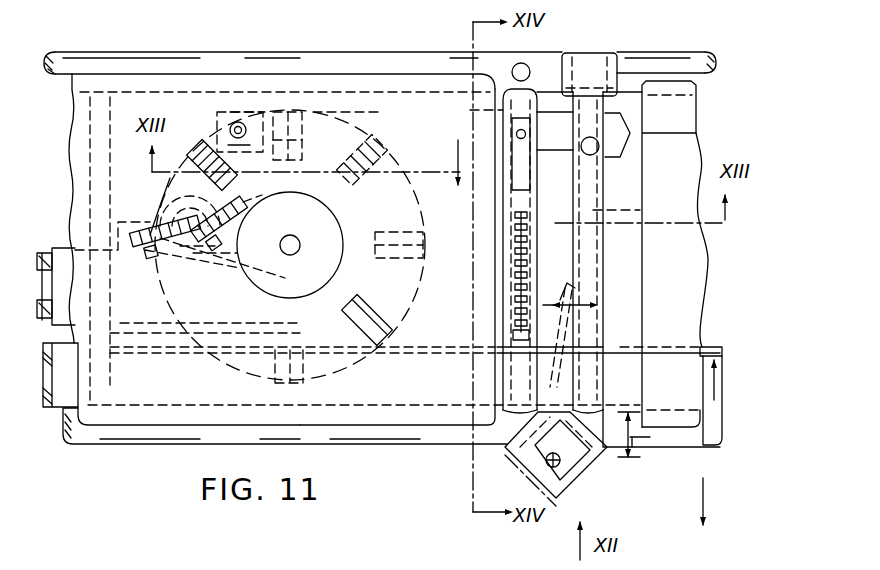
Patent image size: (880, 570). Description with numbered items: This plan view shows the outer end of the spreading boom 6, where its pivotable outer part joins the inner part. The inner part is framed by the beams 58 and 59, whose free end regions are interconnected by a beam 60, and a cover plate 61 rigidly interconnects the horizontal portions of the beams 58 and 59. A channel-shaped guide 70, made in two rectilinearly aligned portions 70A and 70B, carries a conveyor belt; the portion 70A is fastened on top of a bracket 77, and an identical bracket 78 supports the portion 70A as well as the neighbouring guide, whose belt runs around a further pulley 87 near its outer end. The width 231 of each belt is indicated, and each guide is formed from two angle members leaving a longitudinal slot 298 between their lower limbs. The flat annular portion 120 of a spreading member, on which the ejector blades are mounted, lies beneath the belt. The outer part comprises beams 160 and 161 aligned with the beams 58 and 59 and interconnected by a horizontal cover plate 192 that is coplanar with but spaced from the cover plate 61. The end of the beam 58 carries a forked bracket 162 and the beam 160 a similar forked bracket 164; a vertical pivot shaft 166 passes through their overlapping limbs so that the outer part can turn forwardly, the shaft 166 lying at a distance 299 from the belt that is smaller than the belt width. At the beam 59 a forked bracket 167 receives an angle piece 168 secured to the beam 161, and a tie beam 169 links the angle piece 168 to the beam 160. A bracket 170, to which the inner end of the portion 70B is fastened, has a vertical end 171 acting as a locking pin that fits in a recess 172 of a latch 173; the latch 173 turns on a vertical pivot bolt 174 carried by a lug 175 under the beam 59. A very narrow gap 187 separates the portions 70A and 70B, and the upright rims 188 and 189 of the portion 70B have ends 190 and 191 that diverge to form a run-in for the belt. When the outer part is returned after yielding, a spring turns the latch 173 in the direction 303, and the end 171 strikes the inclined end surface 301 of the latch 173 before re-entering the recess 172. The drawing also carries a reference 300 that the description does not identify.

The spreading boom 6 is at (349, 49).
The beam 58 is at (146, 440).
The beam 59 is at (141, 58).
The beam 60 is at (494, 374).
The cover plate 61 is at (72, 127).
The channel-shaped guide 70 is at (54, 394).
The guide portion 70A is at (396, 320).
The guide portion 70B is at (713, 347).
The bracket 77 is at (527, 64).
The bracket 78 is at (80, 158).
The further pulley 87 is at (175, 365).
The annular portion 120 is at (405, 284).
The beam 160 is at (717, 418).
The beam 161 is at (700, 57).
The forked bracket 162 is at (543, 459).
The forked bracket 164 is at (585, 468).
The pivot shaft 166 is at (566, 492).
The forked bracket 167 is at (583, 56).
The angle piece 168 is at (621, 62).
The tie beam 169 is at (603, 243).
The bracket 170 is at (620, 208).
The bracket end 171 is at (633, 144).
The recess 172 is at (600, 158).
The latch 173 is at (567, 147).
The pivot bolt 174 is at (217, 120).
The lug 175 is at (240, 100).
The gap 187 is at (567, 288).
The upright rim 188 is at (717, 445).
The upright rim 189 is at (680, 326).
The rim end 190 is at (607, 391).
The rim end 191 is at (567, 337).
The cover plate 192 is at (680, 125).
The belt width 231 is at (76, 283).
The longitudinal slot 298 is at (364, 391).
The distance 299 is at (647, 448).
The motion arrows 300 is at (722, 372).
The inclined end surface 301 is at (696, 135).
The direction 303 is at (458, 140).